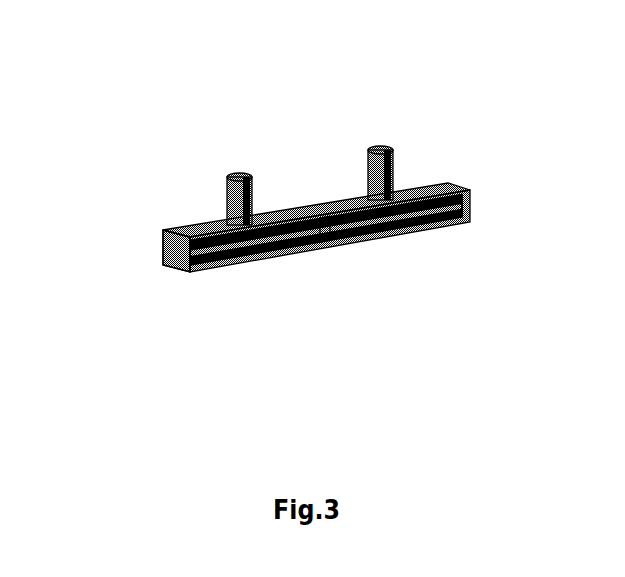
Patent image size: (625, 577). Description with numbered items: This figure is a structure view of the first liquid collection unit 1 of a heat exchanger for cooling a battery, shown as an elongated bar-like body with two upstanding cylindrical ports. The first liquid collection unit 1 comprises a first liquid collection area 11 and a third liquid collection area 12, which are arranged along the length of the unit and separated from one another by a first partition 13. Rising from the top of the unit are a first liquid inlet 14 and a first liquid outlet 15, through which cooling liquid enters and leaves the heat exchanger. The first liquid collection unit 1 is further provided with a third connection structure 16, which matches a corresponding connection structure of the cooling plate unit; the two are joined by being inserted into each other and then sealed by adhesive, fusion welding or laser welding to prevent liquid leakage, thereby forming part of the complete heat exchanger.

The first liquid collection unit 1 is at (282, 215).
The first liquid collection area 11 is at (187, 232).
The third liquid collection area 12 is at (430, 182).
The first partition 13 is at (316, 222).
The first liquid inlet 14 is at (227, 195).
The first liquid outlet 15 is at (395, 150).
The third connection structure 16 is at (453, 225).